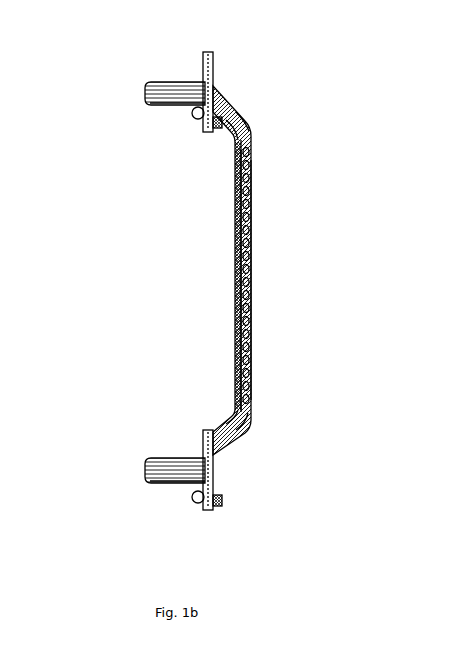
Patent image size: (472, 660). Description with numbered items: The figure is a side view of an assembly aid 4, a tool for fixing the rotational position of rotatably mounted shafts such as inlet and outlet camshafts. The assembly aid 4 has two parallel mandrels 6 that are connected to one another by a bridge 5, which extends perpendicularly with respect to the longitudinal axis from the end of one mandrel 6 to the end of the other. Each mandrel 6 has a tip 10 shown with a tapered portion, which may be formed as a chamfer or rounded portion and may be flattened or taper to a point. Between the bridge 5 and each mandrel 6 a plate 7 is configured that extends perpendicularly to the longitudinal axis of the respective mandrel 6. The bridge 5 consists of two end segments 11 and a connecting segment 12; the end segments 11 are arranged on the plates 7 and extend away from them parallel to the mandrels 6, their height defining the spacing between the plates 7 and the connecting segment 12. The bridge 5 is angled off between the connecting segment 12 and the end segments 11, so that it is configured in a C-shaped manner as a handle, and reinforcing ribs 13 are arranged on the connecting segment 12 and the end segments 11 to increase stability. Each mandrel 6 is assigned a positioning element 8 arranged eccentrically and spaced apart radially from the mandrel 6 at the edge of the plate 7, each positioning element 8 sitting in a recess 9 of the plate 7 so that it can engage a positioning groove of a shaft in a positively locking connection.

The assembly aid 4 is at (302, 148).
The bridge 5 is at (238, 318).
The mandrel 6 is at (150, 102).
The plate 7 is at (203, 52).
The positioning element 8 is at (194, 115).
The recess 9 is at (210, 123).
The tip 10 is at (147, 93).
The end segment 11 is at (218, 104).
The connecting segment 12 is at (250, 351).
The reinforcing rib 13 is at (253, 238).